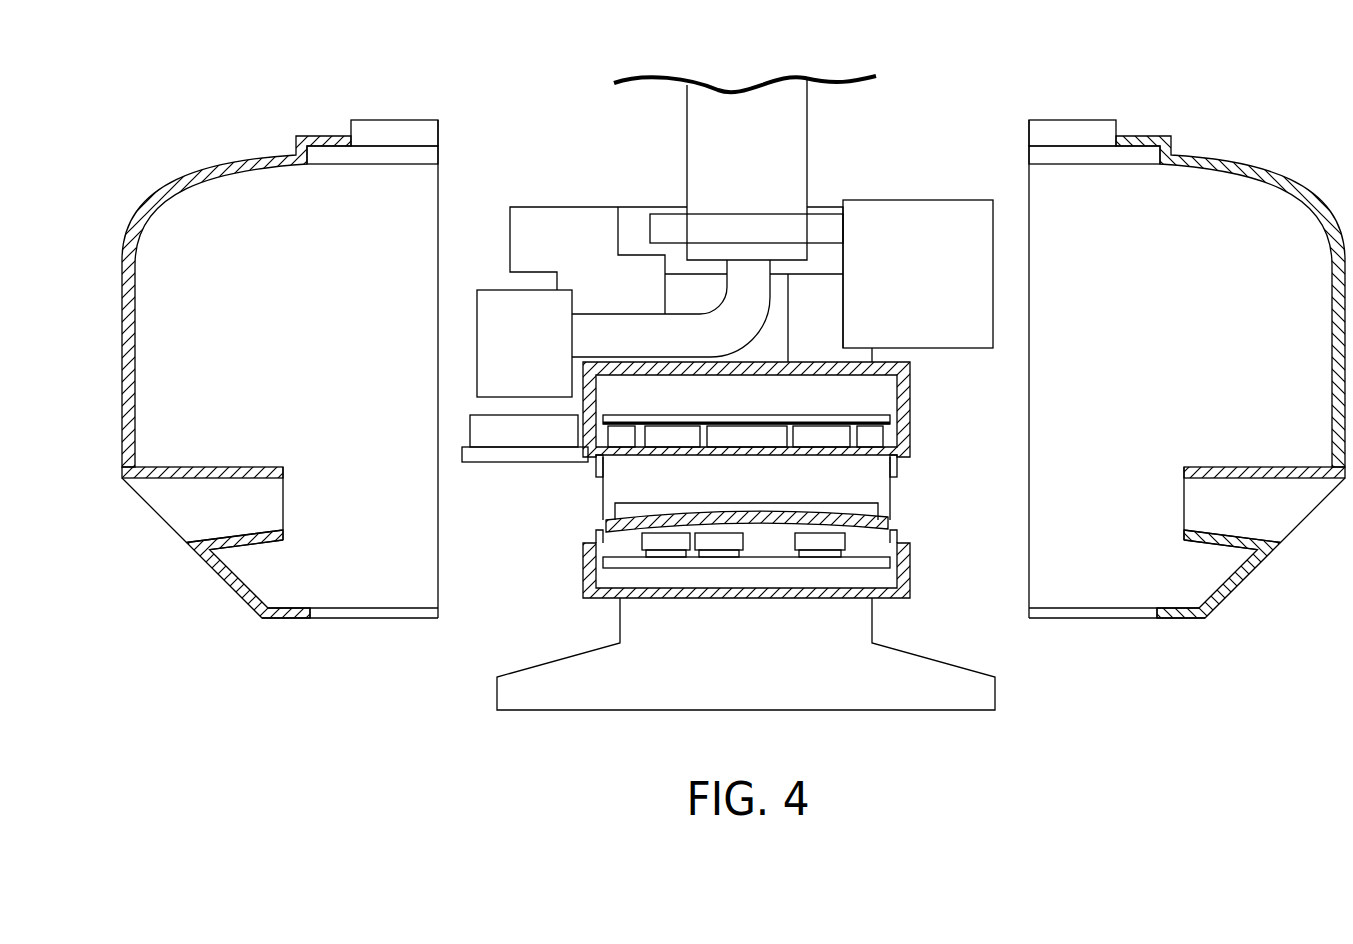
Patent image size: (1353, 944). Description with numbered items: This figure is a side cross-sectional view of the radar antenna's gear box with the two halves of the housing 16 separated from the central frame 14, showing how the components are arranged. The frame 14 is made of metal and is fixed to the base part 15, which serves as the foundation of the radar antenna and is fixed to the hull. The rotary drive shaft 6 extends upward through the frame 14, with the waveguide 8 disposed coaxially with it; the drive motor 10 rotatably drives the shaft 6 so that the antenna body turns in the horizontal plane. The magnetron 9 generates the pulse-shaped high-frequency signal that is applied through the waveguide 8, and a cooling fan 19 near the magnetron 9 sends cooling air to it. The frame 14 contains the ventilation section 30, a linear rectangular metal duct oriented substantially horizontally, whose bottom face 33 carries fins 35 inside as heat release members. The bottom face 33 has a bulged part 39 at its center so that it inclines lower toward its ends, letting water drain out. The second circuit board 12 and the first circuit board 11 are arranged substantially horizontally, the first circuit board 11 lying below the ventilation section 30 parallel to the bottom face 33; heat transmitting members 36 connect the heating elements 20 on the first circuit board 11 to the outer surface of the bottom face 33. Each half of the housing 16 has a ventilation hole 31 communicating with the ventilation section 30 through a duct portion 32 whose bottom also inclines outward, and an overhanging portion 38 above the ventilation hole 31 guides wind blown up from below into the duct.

The rotary drive shaft 6 is at (800, 103).
The waveguide 8 is at (649, 318).
The magnetron 9 is at (492, 297).
The drive motor 10 is at (957, 342).
The first circuit board 11 is at (763, 563).
The second circuit board 12 is at (875, 421).
The frame 14 is at (531, 140).
The base part 15 is at (983, 697).
The housing 16 is at (237, 158).
The cooling fan 19 is at (482, 435).
The heating elements 20 is at (667, 553).
The ventilation section 30 is at (889, 490).
The ventilation hole 31 is at (148, 512).
The duct portion 32 is at (247, 485).
The bottom face 33 is at (608, 528).
The fins 35 is at (695, 508).
The heat transmitting members 36 is at (635, 543).
The overhanging portion 38 is at (133, 487).
The bulged part 39 is at (754, 498).